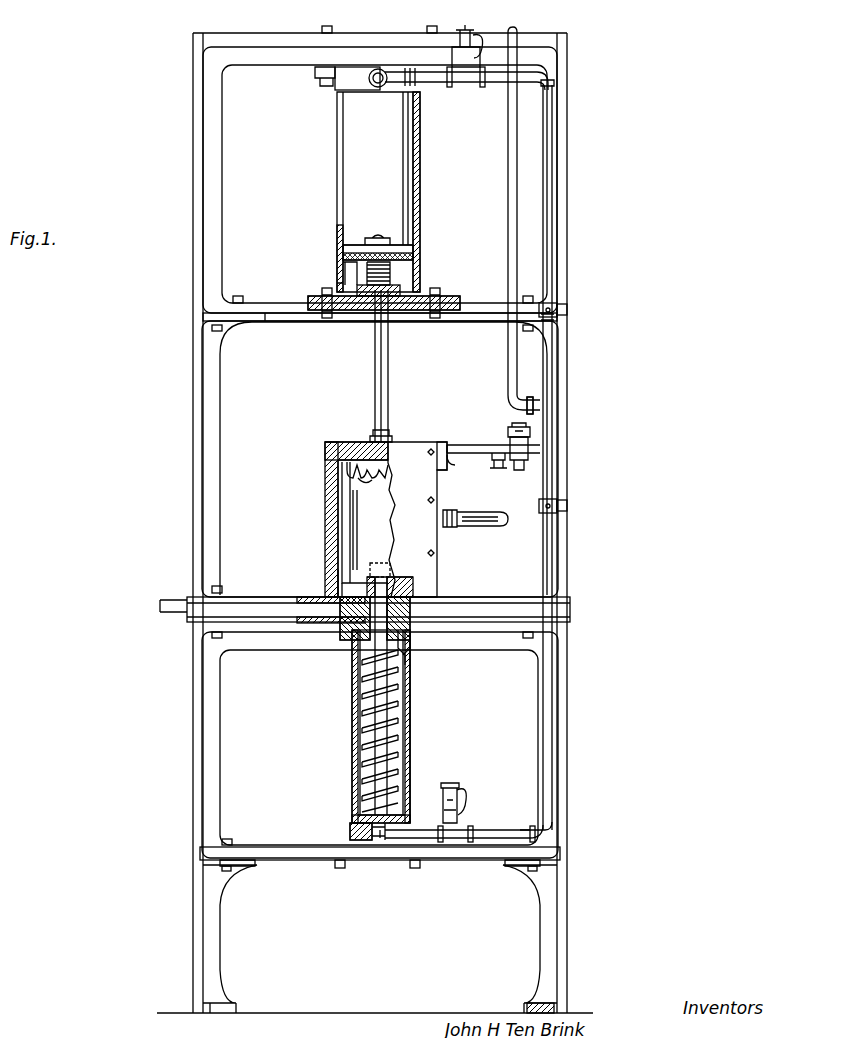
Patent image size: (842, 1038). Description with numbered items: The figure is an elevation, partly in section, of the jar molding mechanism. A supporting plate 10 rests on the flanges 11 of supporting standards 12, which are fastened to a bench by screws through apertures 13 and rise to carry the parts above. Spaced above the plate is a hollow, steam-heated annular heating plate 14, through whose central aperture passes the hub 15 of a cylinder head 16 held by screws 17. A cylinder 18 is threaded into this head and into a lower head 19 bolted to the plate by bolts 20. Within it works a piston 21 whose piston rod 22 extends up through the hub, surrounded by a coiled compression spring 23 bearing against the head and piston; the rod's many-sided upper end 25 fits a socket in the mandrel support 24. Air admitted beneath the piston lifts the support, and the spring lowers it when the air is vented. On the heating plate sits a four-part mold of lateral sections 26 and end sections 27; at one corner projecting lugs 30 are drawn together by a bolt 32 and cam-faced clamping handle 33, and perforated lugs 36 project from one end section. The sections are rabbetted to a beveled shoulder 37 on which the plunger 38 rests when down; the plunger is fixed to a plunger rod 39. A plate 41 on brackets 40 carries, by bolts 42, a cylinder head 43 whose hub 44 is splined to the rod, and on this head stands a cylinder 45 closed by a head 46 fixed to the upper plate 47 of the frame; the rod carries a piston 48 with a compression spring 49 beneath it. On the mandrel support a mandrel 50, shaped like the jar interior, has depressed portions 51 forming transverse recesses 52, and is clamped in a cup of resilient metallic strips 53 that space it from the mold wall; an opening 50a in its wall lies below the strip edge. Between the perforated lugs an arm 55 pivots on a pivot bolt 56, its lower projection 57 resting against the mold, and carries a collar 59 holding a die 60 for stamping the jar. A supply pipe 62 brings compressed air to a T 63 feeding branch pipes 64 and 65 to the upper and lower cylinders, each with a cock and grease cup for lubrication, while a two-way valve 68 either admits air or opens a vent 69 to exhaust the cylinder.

The supporting plate 10 is at (470, 860).
The flanges 11 is at (250, 862).
The supporting standards 12 is at (203, 921).
The apertures 13 is at (550, 1003).
The heating plate 14 is at (258, 612).
The hub 15 is at (345, 640).
The cylinder head 16 is at (412, 640).
The screws 17 is at (335, 636).
The cylinder 18 is at (410, 740).
The lower head 19 is at (378, 842).
The bolts 20 is at (338, 868).
The piston 21 is at (352, 792).
The piston rod 22 is at (388, 680).
The coiled compression spring 23 is at (395, 716).
The mandrel support 24 is at (413, 587).
The many-sided upper end 25 is at (390, 577).
The lateral sections 26 is at (417, 519).
The end sections 27 is at (325, 497).
The lugs 30 is at (449, 508).
The bolt 32 is at (462, 524).
The clamping handle 33 is at (490, 513).
The perforated lugs 36 is at (442, 444).
The beveled shoulder 37 is at (325, 455).
The plunger 38 is at (366, 442).
The plunger rod 39 is at (388, 385).
The brackets 40 is at (240, 322).
The plate 41 is at (297, 306).
The bolts 42 is at (326, 318).
The cylinder head 43 is at (338, 283).
The hub 44 is at (370, 310).
The cylinder 45 is at (345, 196).
The head 46 is at (345, 80).
The upper plate 47 is at (318, 62).
The piston 48 is at (413, 252).
The compression spring 49 is at (392, 275).
The mandrel 50 is at (350, 540).
The opening or slot 50a is at (385, 565).
The depressed portions 51 is at (375, 491).
The recesses 52 is at (388, 468).
The metallic strips 53 is at (338, 580).
The arm 55 is at (485, 448).
The pivot bolt 56 is at (449, 462).
The projecting portion 57 is at (449, 470).
The collar 59 is at (510, 428).
The die 60 is at (508, 430).
The supply pipe 62 is at (543, 272).
The T 63 is at (540, 406).
The branch pipe 64 is at (553, 238).
The branch pipe 65 is at (543, 720).
The valve 68 is at (557, 310).
The vent 69 is at (565, 304).